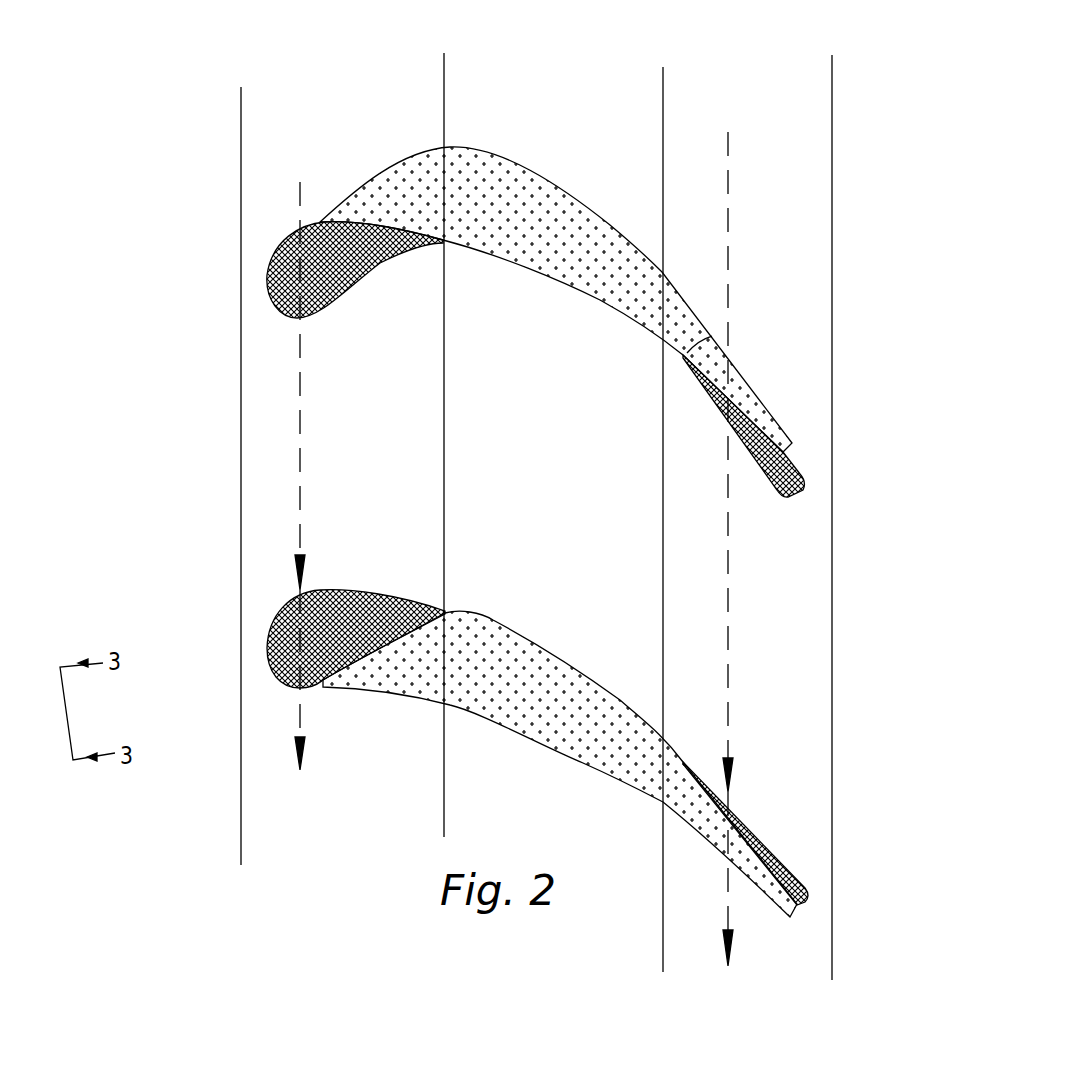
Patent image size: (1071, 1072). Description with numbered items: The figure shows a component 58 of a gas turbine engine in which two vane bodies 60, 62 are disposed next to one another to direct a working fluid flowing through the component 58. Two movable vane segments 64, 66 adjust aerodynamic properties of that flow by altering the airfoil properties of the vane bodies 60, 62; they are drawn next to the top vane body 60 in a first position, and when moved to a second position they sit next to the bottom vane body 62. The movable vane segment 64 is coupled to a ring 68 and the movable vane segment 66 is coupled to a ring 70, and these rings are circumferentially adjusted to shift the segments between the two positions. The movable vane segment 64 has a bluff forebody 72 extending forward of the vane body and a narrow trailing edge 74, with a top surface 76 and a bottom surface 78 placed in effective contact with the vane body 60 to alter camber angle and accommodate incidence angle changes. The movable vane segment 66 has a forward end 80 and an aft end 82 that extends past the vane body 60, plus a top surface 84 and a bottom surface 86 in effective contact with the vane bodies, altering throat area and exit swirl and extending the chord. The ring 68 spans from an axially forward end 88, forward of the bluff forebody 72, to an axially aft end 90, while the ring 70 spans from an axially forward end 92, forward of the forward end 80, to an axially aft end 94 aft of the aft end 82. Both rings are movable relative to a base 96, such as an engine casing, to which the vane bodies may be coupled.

The component 58 is at (745, 72).
The vane body 60 is at (550, 180).
The vane body 62 is at (583, 673).
The movable vane segment 64 is at (272, 250).
The movable vane segment 66 is at (793, 470).
The ring 68 is at (263, 132).
The ring 70 is at (812, 235).
The bluff forebody 72 is at (267, 272).
The narrow trailing edge 74 is at (441, 247).
The top surface 76 is at (318, 222).
The bottom surface 78 is at (330, 305).
The forward end 80 is at (707, 333).
The aft end 82 is at (807, 493).
The top surface 84 is at (773, 423).
The bottom surface 86 is at (770, 877).
The axially forward end 88 is at (240, 433).
The axially aft end 90 is at (444, 105).
The axially forward end 92 is at (660, 457).
The axially aft end 94 is at (833, 698).
The base 96 is at (611, 85).